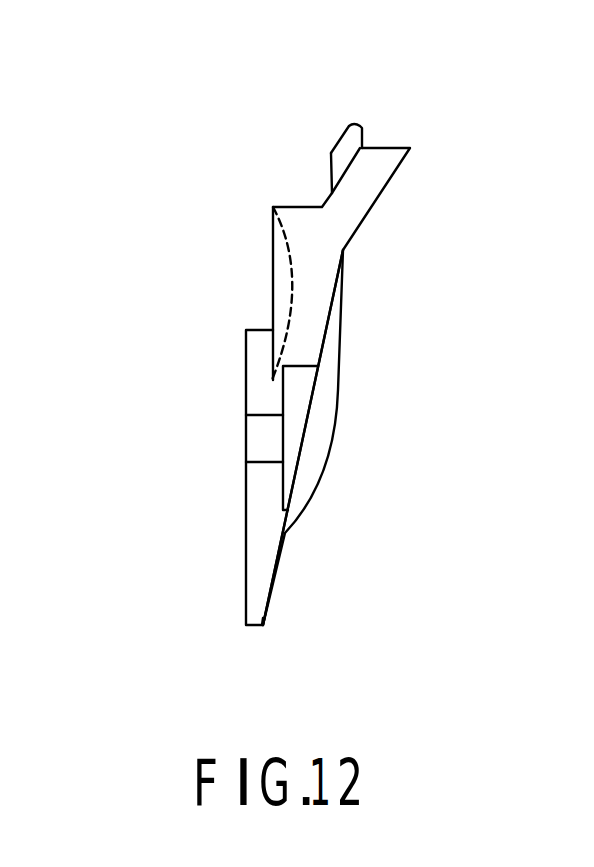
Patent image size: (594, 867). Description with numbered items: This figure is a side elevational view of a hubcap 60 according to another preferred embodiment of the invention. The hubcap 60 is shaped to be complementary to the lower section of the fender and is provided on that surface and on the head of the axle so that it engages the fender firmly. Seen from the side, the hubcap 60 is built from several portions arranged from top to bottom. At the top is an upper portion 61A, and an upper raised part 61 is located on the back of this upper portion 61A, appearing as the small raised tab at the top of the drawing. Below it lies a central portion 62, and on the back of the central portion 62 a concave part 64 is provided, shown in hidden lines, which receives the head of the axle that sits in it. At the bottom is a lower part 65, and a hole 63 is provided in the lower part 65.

The hubcap 60 is at (330, 357).
The upper raised part 61 is at (350, 138).
The upper portion 61A is at (373, 173).
The central portion 62 is at (330, 315).
The hole 63 is at (270, 435).
The concave part 64 is at (282, 290).
The lower part 65 is at (265, 568).